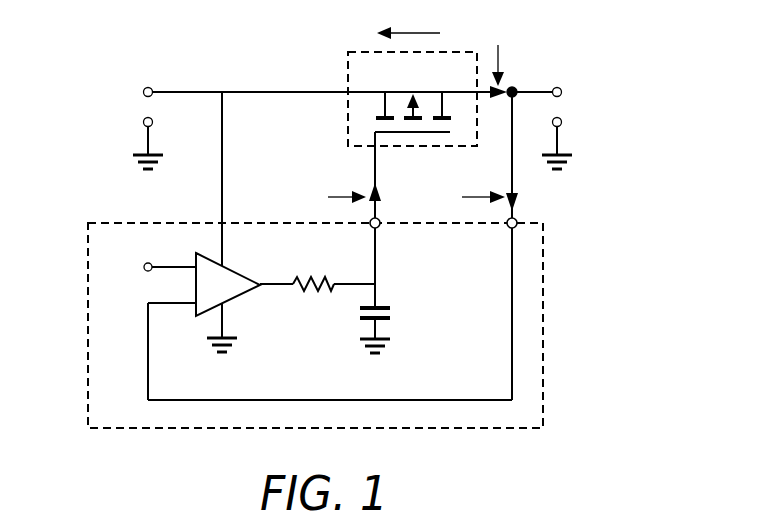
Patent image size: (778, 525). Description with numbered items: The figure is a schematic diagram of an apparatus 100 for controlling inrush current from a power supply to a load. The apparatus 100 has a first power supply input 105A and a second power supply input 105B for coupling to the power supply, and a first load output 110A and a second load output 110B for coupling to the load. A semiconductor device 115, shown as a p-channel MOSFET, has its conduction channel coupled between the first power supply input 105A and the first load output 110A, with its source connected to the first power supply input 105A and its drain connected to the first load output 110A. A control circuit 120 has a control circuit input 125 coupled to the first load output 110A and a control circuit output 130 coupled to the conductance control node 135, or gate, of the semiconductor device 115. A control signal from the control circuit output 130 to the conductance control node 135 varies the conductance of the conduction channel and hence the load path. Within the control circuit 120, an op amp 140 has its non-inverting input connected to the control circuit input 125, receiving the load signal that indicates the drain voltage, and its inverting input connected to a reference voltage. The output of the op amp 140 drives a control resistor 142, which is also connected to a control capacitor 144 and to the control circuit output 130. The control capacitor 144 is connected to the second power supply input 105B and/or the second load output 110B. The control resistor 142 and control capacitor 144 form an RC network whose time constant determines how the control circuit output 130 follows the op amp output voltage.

The apparatus 100 is at (530, 459).
The first power supply input 105A is at (143, 92).
The second power supply input 105B is at (143, 122).
The first load output 110A is at (562, 92).
The second load output 110B is at (562, 122).
The semiconductor device 115 is at (347, 68).
The control circuit 120 is at (577, 363).
The control circuit input 125 is at (510, 228).
The control circuit output 130 is at (377, 228).
The conductance control node 135 is at (360, 127).
The op amp 140 is at (235, 297).
The control resistor 142 is at (320, 277).
The control capacitor 144 is at (391, 312).